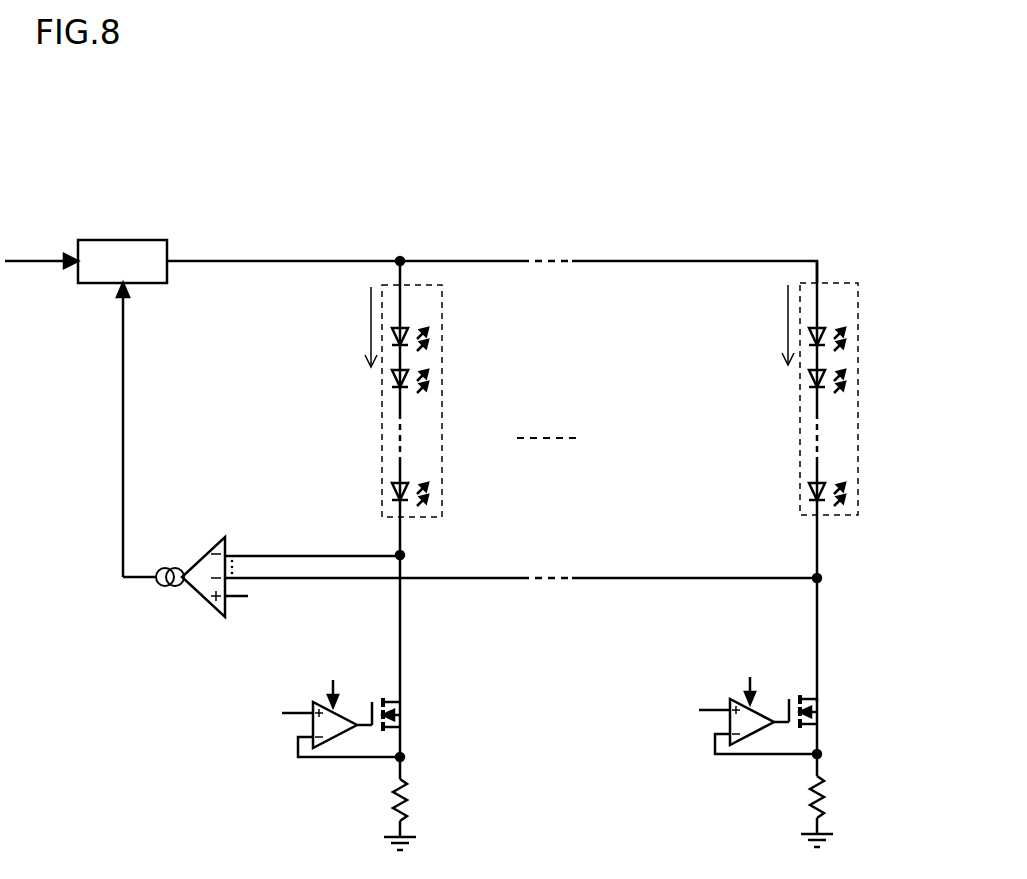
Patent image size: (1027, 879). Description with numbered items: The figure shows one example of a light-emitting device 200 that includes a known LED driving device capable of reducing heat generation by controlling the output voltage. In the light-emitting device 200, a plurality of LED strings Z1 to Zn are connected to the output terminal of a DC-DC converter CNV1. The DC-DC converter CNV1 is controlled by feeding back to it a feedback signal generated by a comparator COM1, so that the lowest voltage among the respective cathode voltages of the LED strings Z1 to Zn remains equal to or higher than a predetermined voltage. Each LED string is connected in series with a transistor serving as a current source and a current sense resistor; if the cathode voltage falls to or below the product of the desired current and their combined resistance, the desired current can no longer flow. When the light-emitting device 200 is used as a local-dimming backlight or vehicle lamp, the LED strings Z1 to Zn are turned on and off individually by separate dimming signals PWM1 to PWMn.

The light-emitting device 200 is at (728, 199).
The DC-DC converter CNV1 is at (123, 240).
The LED string Z1 is at (442, 305).
The LED string Zn is at (858, 305).
The comparator COM1 is at (198, 604).
The dimming signal PWM1 is at (297, 753).
The dimming signal PWMn is at (711, 751).